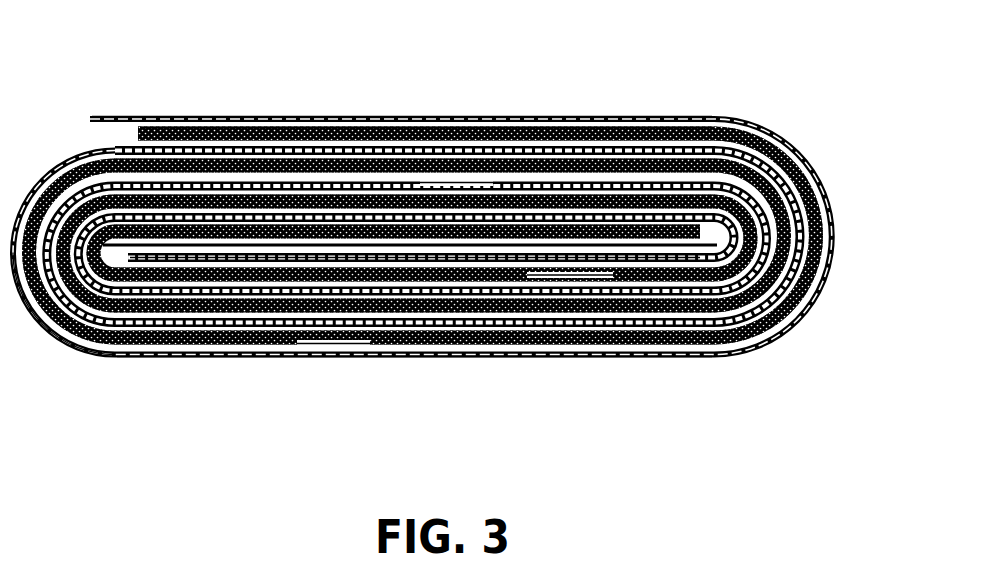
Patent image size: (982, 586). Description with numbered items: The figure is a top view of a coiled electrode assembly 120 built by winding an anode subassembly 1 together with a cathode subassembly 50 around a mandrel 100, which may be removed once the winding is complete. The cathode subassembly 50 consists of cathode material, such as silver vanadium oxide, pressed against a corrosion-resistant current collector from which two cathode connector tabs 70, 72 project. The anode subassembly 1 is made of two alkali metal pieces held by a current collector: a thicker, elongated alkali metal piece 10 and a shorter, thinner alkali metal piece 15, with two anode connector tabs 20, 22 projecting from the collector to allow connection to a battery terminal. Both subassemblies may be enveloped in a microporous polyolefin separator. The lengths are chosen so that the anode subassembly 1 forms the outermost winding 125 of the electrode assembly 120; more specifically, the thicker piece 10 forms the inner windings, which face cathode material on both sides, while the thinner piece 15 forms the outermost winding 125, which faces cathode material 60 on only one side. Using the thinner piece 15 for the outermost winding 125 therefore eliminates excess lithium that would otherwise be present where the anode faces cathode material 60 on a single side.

The electrode assembly 120 is at (648, 96).
The thinner alkali metal piece 15 is at (143, 118).
The anode connector tab 22 is at (253, 118).
The cathode material 60 is at (536, 118).
The anode connector tab 20 is at (458, 182).
The mandrel 100 is at (720, 237).
The elongated alkali metal piece 10 is at (420, 257).
The anode subassembly 1 is at (295, 352).
The cathode connector tab 72 is at (350, 345).
The cathode connector tab 70 is at (613, 270).
The cathode subassembly 50 is at (503, 357).
The outermost winding 125 is at (147, 357).